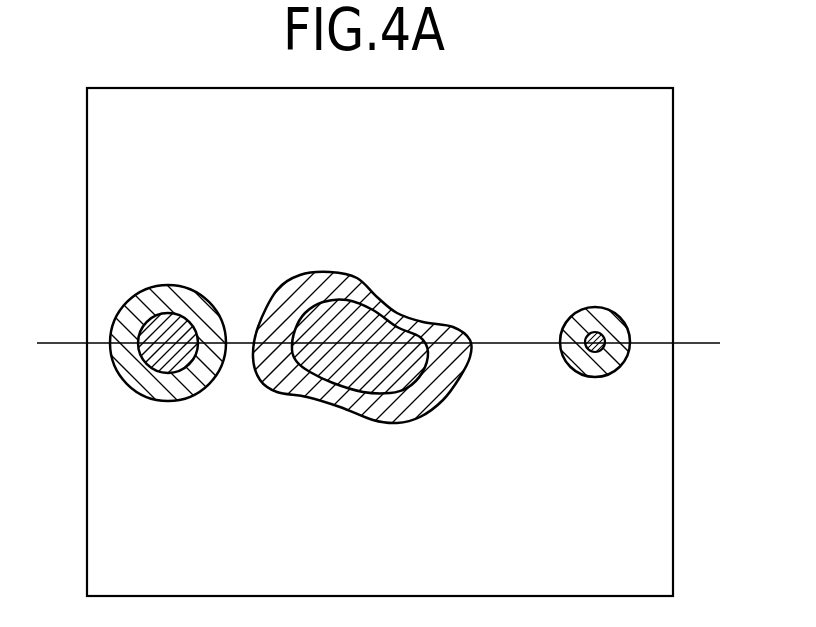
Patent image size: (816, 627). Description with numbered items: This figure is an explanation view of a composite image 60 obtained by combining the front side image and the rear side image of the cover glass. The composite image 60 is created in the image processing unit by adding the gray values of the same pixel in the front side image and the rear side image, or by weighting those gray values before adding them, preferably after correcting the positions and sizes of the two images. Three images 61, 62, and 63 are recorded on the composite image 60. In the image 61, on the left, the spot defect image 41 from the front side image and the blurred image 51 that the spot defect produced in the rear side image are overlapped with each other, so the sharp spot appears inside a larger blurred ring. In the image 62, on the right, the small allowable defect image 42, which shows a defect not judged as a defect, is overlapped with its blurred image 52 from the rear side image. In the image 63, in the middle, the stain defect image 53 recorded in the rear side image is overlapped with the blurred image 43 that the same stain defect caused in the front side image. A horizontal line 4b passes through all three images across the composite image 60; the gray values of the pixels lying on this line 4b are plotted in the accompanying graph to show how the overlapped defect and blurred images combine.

The composite image 60 is at (55, 130).
The image 61 is at (168, 330).
The image 62 is at (580, 325).
The image 63 is at (362, 346).
The spot defect image 41 is at (155, 373).
The allowable defect image 42 is at (598, 353).
The blurred image 43 is at (308, 388).
The blurred image 51 is at (200, 378).
The blurred image 52 is at (570, 366).
The stain defect image 53 is at (362, 373).
The line 4b is at (700, 346).